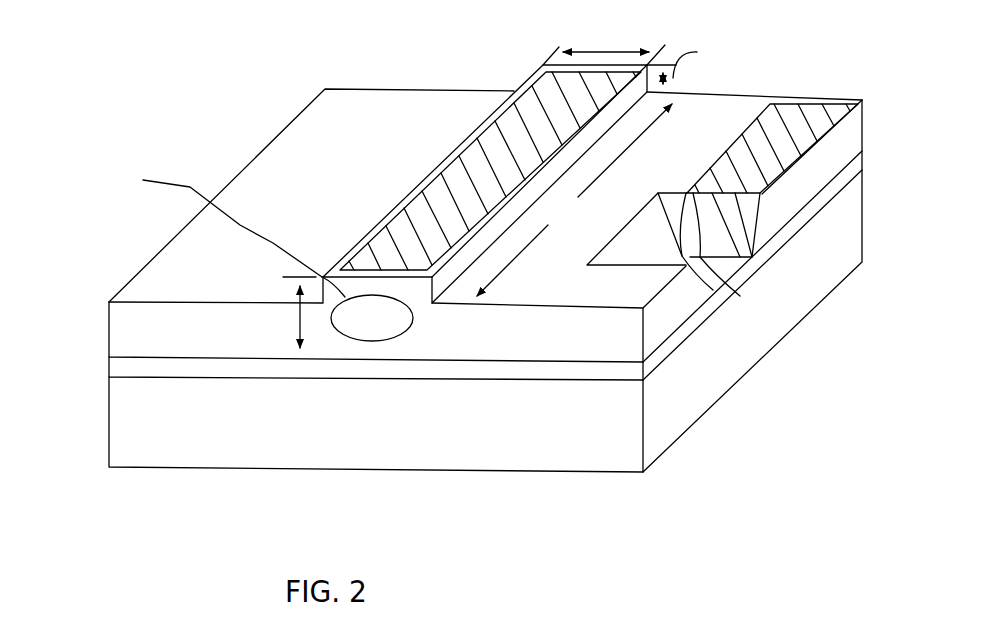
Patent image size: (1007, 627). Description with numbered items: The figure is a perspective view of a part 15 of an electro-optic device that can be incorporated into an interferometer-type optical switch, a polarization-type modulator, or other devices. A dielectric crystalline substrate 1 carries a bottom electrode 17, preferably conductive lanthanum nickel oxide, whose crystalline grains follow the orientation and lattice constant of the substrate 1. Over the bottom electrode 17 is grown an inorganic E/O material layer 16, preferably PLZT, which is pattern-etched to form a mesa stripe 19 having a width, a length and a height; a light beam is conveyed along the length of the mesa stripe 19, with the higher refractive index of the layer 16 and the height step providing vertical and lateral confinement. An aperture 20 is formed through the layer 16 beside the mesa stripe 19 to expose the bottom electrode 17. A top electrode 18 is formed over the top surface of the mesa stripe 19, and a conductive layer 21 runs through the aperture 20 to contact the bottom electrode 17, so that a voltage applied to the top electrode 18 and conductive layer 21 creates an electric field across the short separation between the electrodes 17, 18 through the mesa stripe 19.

The dielectric crystalline substrate 1 is at (113, 458).
The part of an electro-optic device 15 is at (66, 511).
The inorganic E/O material layer 16 is at (123, 322).
The bottom electrode 17 is at (121, 367).
The top electrode 18 is at (472, 172).
The mesa stripe 19 is at (542, 63).
The aperture 20 is at (647, 240).
The conductive layer 21 is at (797, 112).